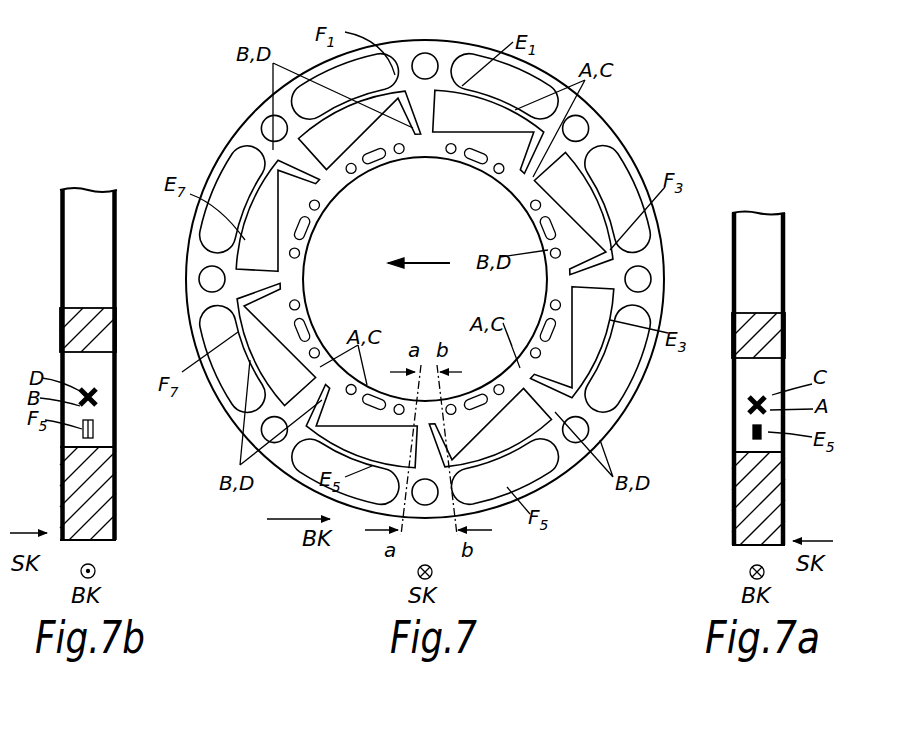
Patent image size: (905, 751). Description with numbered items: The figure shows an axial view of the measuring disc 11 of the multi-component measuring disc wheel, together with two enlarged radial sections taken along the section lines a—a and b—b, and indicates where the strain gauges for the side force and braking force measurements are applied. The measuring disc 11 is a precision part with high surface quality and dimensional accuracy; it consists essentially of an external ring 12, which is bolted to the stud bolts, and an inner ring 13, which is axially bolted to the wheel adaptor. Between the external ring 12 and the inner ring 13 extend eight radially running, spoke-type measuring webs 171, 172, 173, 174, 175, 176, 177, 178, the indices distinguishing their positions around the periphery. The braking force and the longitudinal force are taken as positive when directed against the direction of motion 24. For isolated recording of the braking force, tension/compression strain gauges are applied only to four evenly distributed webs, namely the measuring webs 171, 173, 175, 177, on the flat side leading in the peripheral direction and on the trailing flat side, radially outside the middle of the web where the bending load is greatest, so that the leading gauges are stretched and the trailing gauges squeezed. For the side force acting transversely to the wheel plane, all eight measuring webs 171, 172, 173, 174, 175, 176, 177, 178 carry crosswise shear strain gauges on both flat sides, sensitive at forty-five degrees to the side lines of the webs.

In FIG. 7, the measuring disc 11 is at (618, 123).
In FIG. 7B, the measuring disc 11 is at (58, 272).
In FIG. 7A, the measuring disc 11 is at (788, 272).
In FIG. 7, the external ring 12 is at (535, 470).
In FIG. 7B, the external ring 12 is at (108, 514).
In FIG. 7A, the external ring 12 is at (742, 514).
In FIG. 7, the inner ring 13 is at (510, 392).
In FIG. 7B, the inner ring 13 is at (108, 323).
In FIG. 7A, the inner ring 13 is at (778, 337).
In FIG. 7, the direction of motion 24 is at (425, 257).
In FIG. 7, the measuring web 171 is at (453, 137).
In FIG. 7, the measuring web 172 is at (535, 176).
In FIG. 7, the measuring web 173 is at (578, 281).
In FIG. 7, the measuring web 174 is at (535, 387).
In FIG. 7, the measuring web 175 is at (447, 414).
In FIG. 7B, the measuring web 175 is at (100, 375).
In FIG. 7A, the measuring web 175 is at (738, 383).
In FIG. 7, the measuring web 176 is at (320, 400).
In FIG. 7, the measuring web 177 is at (273, 282).
In FIG. 7, the measuring web 178 is at (315, 176).